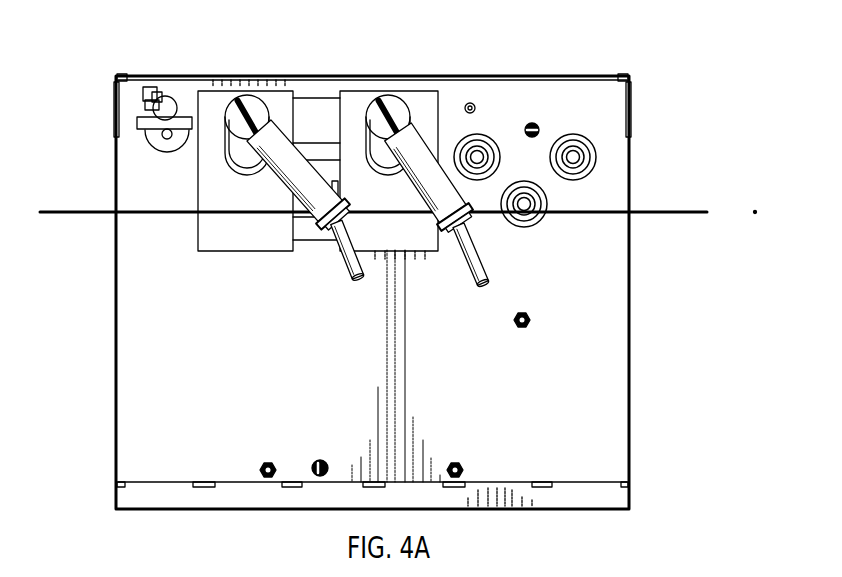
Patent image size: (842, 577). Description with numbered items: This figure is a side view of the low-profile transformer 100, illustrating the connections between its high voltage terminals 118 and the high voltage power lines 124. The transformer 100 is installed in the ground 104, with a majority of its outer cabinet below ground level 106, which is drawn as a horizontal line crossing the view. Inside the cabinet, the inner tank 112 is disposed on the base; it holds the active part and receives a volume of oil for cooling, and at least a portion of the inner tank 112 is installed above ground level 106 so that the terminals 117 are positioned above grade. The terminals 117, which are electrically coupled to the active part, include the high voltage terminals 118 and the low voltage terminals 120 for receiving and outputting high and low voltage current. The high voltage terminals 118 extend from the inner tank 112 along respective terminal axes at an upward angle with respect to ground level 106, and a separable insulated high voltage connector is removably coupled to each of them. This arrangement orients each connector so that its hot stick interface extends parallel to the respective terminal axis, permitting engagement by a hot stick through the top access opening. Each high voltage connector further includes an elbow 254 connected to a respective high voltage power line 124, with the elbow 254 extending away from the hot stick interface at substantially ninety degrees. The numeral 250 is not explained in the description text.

The low-profile transformer 100 is at (78, 84).
The inner tank 112 is at (130, 165).
The ground level 106 is at (657, 212).
The ground 104 is at (710, 263).
The caps 250 is at (382, 117).
The terminals 117 is at (236, 150).
The low voltage terminals 120 is at (477, 157).
The high voltage terminals 118 is at (370, 162).
The elbow 254 is at (423, 197).
The high voltage power lines 124 is at (467, 263).